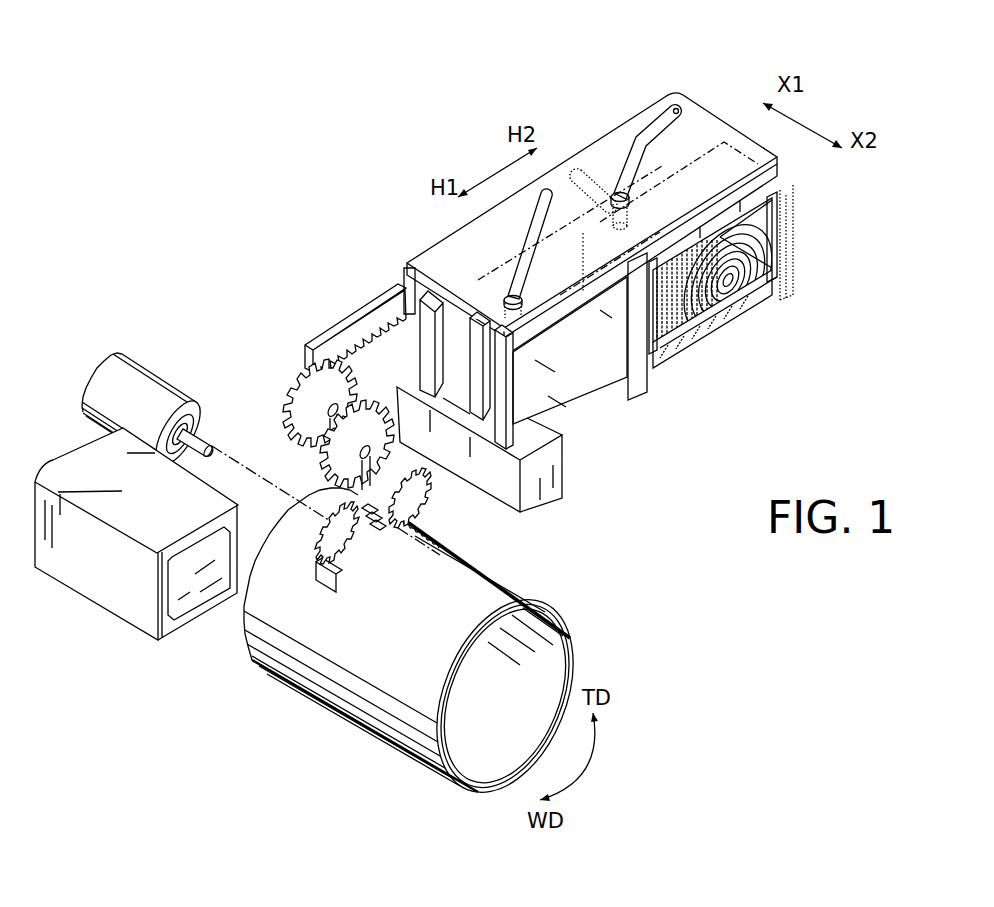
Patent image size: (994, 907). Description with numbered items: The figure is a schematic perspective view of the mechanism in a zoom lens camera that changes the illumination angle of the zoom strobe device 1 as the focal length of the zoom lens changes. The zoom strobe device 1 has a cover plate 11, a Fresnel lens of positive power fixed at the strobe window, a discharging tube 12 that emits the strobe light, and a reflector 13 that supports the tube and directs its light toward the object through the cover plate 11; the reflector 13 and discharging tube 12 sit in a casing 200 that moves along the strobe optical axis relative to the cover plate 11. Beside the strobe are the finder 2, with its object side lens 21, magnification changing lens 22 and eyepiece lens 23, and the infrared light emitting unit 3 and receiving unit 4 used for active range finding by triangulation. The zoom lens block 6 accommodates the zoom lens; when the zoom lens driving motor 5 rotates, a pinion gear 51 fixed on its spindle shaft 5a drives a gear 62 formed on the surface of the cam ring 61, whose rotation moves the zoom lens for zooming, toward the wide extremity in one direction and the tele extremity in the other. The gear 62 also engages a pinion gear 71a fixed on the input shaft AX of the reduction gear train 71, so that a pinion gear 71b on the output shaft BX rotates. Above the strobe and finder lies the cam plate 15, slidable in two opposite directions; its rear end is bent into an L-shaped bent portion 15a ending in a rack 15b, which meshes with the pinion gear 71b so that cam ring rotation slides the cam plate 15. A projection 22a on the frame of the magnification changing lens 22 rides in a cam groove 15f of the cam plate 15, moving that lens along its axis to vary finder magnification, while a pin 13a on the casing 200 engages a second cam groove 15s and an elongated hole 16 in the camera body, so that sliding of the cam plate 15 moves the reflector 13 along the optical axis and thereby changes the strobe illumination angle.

The zoom strobe device 1 is at (712, 295).
The finder 2 is at (583, 372).
The infrared light emitting unit 3 is at (545, 480).
The infrared light receiving unit 4 is at (185, 615).
The zoom lens driving motor 5 is at (90, 380).
The spindle shaft 5a is at (205, 440).
The zoom lens block 6 is at (568, 650).
The cover plate 11 is at (790, 290).
The discharging tube 12 is at (726, 238).
The reflector 13 is at (634, 388).
The pin 13a is at (632, 199).
The cam plate 15 is at (702, 114).
The bent portion 15a is at (404, 285).
The rack 15b is at (305, 352).
The cam groove 15f is at (530, 250).
The cam groove 15s is at (641, 135).
The elongated hole 16 is at (590, 168).
The object side lens 21 is at (560, 406).
The magnification changing lens 22 is at (476, 326).
The projection 22a is at (506, 288).
The eyepiece lens 23 is at (438, 304).
The pinion gear 51 is at (322, 544).
The cam ring 61 is at (392, 742).
The gear 62 is at (330, 595).
The reduction gear train 71 is at (350, 458).
The pinion gear 71a is at (418, 528).
The pinion gear 71b is at (338, 372).
The casing 200 is at (793, 190).
The output shaft BX is at (290, 443).
The input shaft AX is at (400, 525).